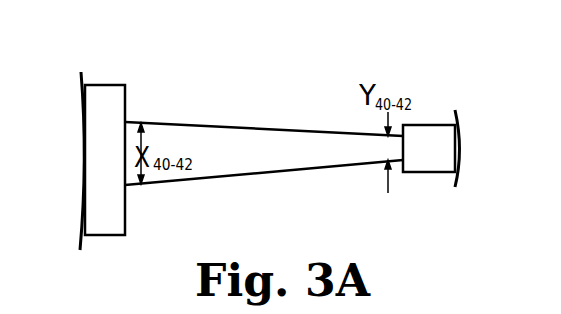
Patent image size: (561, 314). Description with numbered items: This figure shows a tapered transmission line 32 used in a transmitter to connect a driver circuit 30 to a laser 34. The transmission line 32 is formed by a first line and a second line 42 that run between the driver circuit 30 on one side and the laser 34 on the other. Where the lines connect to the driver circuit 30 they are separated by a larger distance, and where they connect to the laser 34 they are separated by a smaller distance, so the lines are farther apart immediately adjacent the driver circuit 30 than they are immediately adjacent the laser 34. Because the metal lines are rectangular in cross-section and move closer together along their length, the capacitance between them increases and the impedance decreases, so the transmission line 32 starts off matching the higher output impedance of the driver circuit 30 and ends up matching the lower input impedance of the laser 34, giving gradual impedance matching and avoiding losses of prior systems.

The driver circuit 30 is at (93, 85).
The transmission line 32 is at (219, 38).
The laser 34 is at (423, 124).
The second line 42 is at (230, 180).